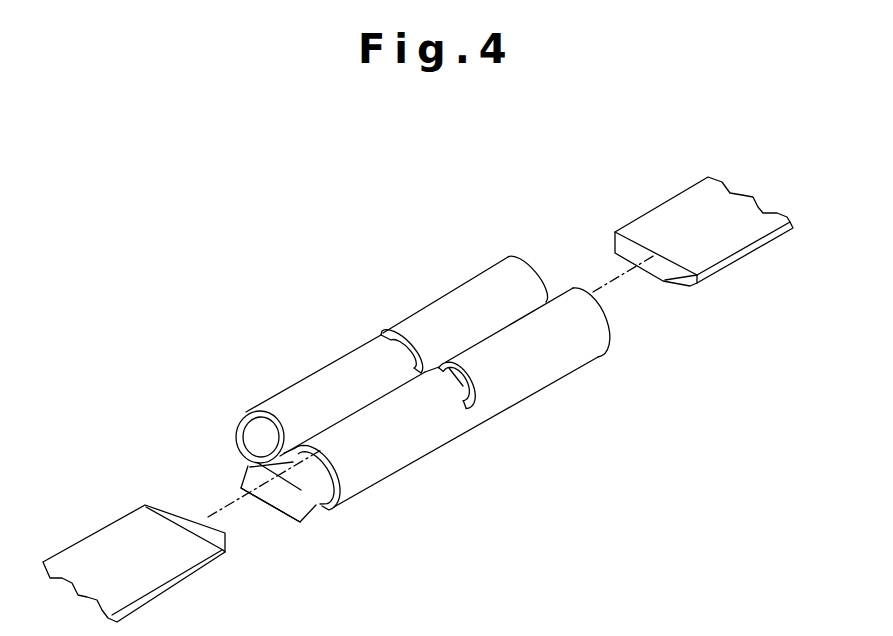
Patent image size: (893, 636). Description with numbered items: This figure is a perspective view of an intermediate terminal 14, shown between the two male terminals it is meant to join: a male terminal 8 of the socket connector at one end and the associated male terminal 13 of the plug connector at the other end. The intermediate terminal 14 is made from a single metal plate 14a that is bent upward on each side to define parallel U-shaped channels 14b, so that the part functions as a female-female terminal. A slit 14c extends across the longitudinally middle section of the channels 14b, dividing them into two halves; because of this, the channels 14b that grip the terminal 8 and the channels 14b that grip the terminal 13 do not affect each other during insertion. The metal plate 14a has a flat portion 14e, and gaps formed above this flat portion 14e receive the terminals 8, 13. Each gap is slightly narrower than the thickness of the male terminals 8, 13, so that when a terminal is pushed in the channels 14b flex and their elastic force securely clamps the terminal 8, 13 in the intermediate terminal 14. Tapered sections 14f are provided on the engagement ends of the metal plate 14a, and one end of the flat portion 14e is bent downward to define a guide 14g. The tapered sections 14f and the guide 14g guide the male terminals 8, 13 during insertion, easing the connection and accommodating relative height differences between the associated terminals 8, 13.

The male terminal 8 is at (98, 547).
The male terminal 13 is at (722, 245).
The intermediate terminal 14 is at (495, 265).
The metal plate 14a is at (420, 459).
The U-shaped channels 14b is at (363, 413).
The slit 14c is at (383, 332).
The flat portion 14e is at (243, 478).
The tapered section 14f is at (263, 438).
The guide 14g is at (273, 508).